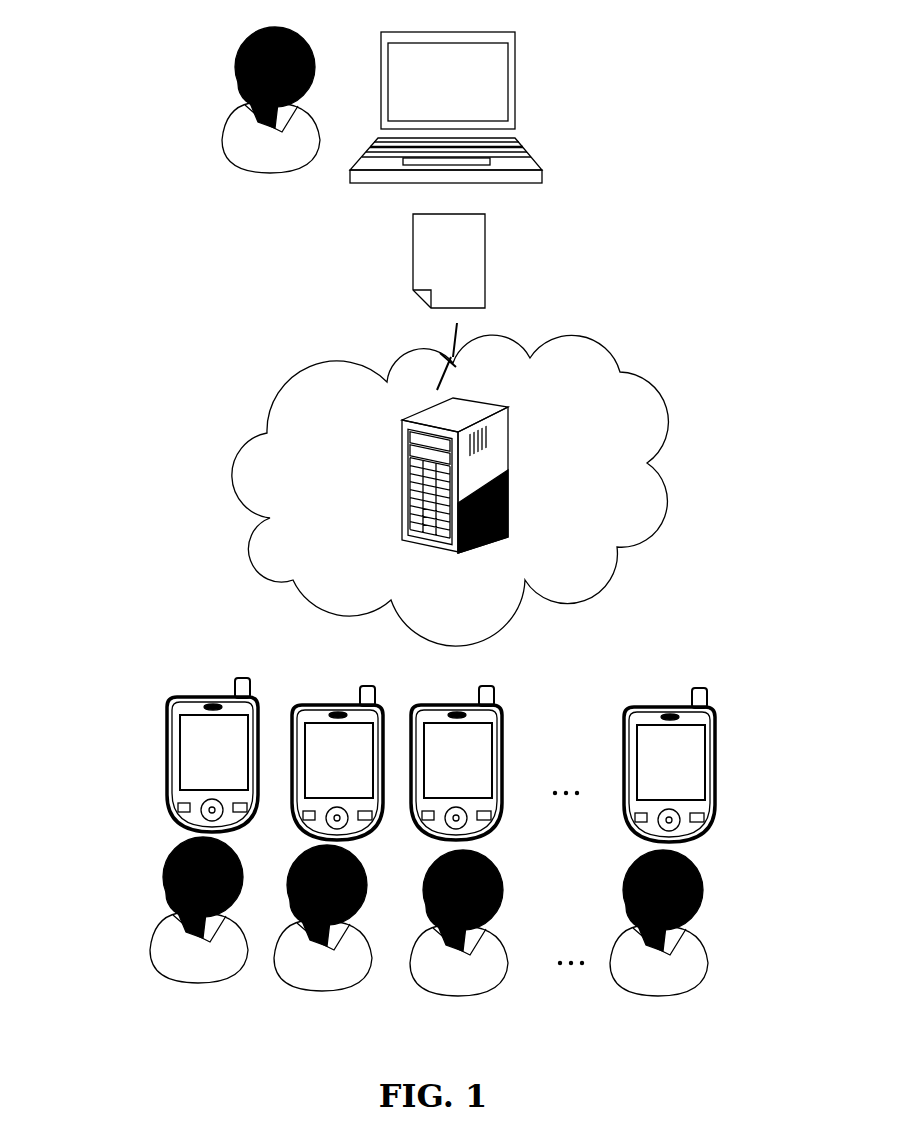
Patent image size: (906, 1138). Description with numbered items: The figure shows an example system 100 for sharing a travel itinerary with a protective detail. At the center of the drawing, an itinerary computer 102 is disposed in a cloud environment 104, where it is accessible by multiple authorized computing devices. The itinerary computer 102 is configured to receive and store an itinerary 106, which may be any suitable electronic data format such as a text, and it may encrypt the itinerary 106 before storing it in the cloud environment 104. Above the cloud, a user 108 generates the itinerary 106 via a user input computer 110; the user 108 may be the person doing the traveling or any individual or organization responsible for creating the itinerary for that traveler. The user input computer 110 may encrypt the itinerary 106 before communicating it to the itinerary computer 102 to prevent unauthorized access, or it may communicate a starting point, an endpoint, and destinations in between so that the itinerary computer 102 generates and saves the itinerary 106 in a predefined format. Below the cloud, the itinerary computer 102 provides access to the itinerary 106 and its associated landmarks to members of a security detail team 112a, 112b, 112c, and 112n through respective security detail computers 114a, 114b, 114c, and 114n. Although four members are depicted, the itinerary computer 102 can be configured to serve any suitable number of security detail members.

The system 100 is at (138, 290).
The itinerary computer 102 is at (402, 434).
The cloud environment 104 is at (676, 488).
The itinerary 106 is at (413, 245).
The user 108 is at (218, 137).
The user input computer 110 is at (537, 160).
The security detail team member 112a is at (165, 978).
The security detail team member 112b is at (300, 992).
The security detail team member 112c is at (437, 993).
The security detail team member 112n is at (638, 992).
The security detail computer 114a is at (182, 697).
The security detail computer 114b is at (305, 705).
The security detail computer 114c is at (420, 705).
The security detail computer 114n is at (635, 705).